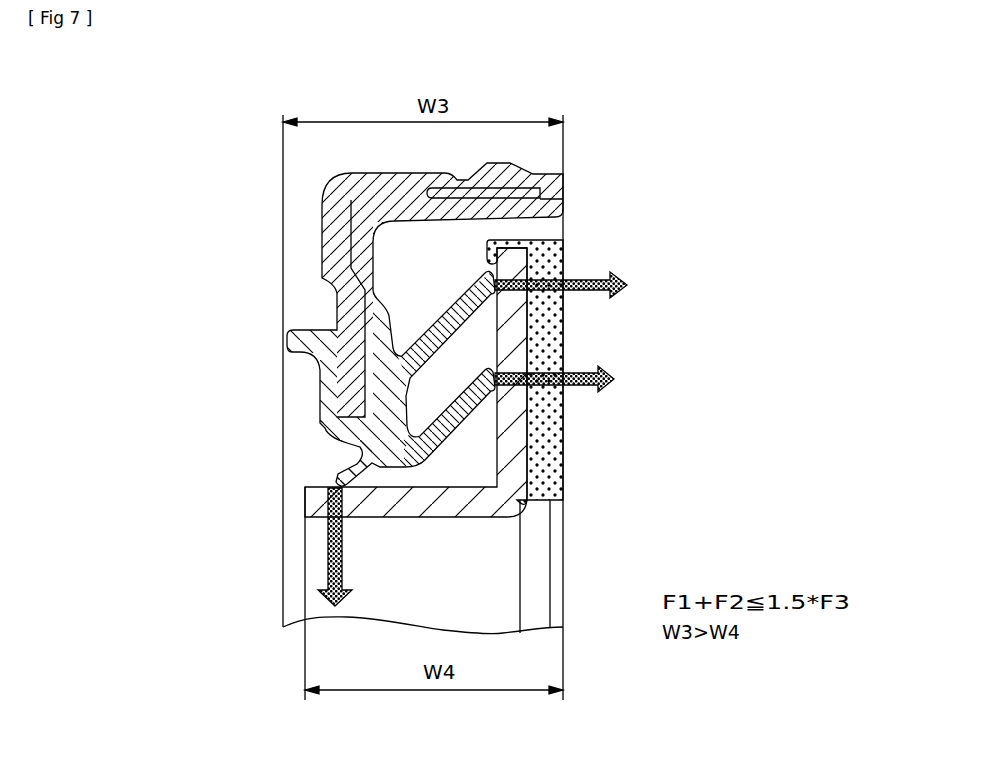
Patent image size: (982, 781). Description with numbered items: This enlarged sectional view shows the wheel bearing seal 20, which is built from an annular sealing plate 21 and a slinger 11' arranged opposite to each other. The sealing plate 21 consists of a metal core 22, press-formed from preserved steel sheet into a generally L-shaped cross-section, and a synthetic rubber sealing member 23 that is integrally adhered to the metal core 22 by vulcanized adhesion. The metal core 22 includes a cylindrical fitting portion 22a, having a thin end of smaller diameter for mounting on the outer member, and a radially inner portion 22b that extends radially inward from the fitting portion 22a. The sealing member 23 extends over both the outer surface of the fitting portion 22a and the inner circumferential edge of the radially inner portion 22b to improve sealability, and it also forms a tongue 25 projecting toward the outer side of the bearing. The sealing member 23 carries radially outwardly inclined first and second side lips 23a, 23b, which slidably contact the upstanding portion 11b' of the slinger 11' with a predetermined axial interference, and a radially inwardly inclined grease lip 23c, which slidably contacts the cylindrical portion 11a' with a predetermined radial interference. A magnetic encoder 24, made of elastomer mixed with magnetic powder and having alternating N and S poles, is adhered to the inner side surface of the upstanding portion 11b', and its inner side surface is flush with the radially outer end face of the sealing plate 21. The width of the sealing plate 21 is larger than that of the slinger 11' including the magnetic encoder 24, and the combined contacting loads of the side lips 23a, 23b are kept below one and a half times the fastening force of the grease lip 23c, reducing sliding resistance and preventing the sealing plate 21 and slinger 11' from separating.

The seal 20 is at (686, 184).
The sealing plate 21 is at (137, 265).
The metal core 22 is at (202, 215).
The cylindrical fitting portion 22a is at (370, 191).
The radially inner portion 22b is at (352, 275).
The sealing member 23 is at (202, 317).
The first side lip 23a is at (472, 295).
The second side lip 23b is at (480, 387).
The grease lip 23c is at (333, 473).
The tongue 25 is at (293, 350).
The magnetic encoder 24 is at (553, 403).
The slinger 11' is at (499, 382).
The cylindrical portion 11a' is at (465, 493).
The upstanding portion 11b' is at (561, 367).